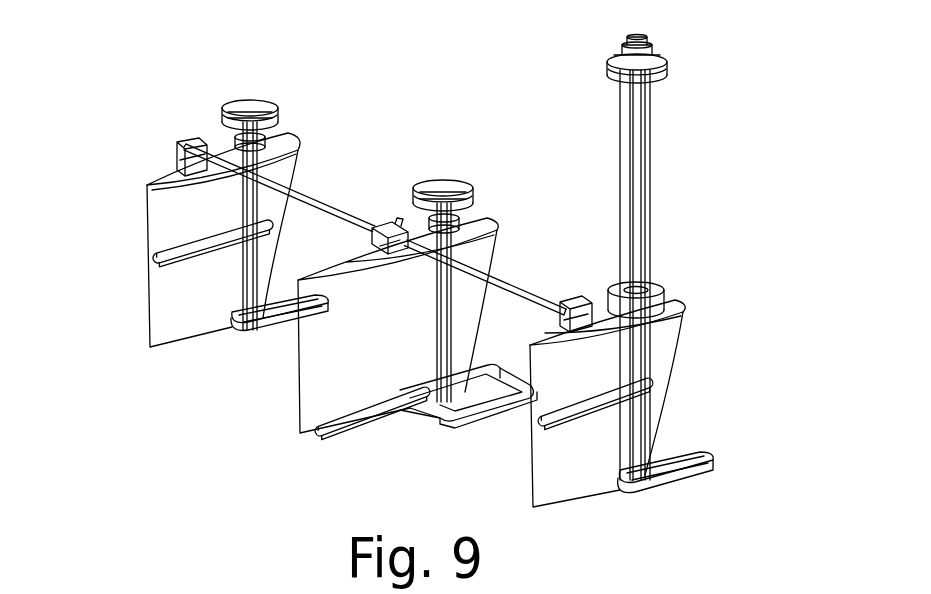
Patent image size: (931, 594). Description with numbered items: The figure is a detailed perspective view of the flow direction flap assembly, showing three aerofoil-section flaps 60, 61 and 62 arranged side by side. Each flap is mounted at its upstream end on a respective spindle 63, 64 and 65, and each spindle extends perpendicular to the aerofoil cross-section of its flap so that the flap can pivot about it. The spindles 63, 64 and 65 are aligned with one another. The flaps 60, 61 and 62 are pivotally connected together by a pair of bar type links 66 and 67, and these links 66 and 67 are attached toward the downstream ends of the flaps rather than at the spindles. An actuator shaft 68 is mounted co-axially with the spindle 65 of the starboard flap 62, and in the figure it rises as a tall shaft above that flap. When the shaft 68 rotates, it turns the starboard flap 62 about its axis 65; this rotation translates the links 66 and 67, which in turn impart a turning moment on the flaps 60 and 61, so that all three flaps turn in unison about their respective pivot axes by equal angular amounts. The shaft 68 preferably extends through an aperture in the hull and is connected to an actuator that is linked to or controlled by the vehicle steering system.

The flap 60 is at (146, 298).
The flap 61 is at (298, 392).
The starboard flap 62 is at (528, 465).
The spindle 63 is at (246, 102).
The spindle 64 is at (448, 179).
The spindle 65 is at (664, 282).
The bar type link 66 is at (322, 186).
The bar type link 67 is at (520, 272).
The actuator shaft 68 is at (651, 170).